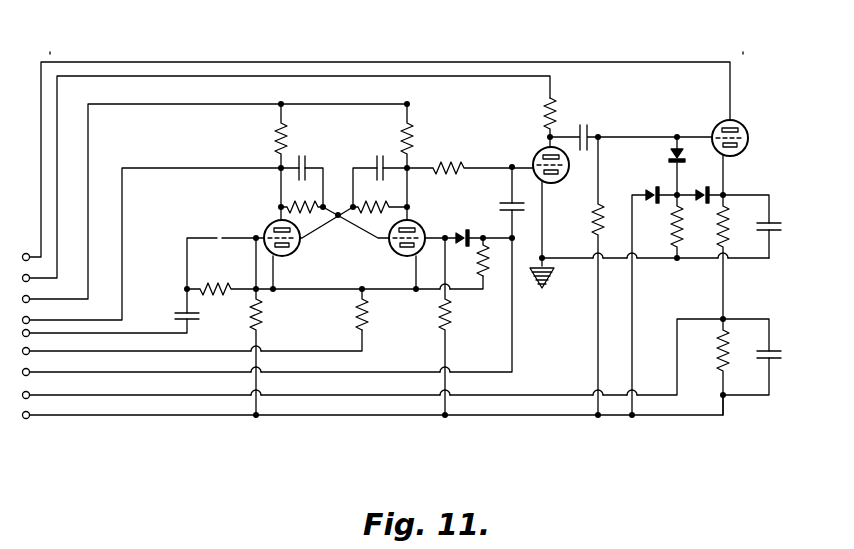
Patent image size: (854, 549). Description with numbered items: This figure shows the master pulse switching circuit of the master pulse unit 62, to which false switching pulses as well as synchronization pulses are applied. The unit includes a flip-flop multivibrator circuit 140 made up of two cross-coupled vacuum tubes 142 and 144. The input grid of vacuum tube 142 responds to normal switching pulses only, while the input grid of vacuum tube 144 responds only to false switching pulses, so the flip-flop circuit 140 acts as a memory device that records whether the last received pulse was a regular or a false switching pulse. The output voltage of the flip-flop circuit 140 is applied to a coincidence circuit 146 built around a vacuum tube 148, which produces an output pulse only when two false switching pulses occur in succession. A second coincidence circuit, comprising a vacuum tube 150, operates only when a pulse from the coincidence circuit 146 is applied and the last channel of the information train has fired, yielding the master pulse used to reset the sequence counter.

The master pulse unit 62 is at (743, 52).
The flip-flop multivibrator circuit 140 is at (413, 102).
The vacuum tube 142 is at (272, 221).
The vacuum tube 144 is at (418, 221).
The coincidence circuit 146 is at (472, 98).
The vacuum tube 148 is at (557, 183).
The vacuum tube 150 is at (746, 134).